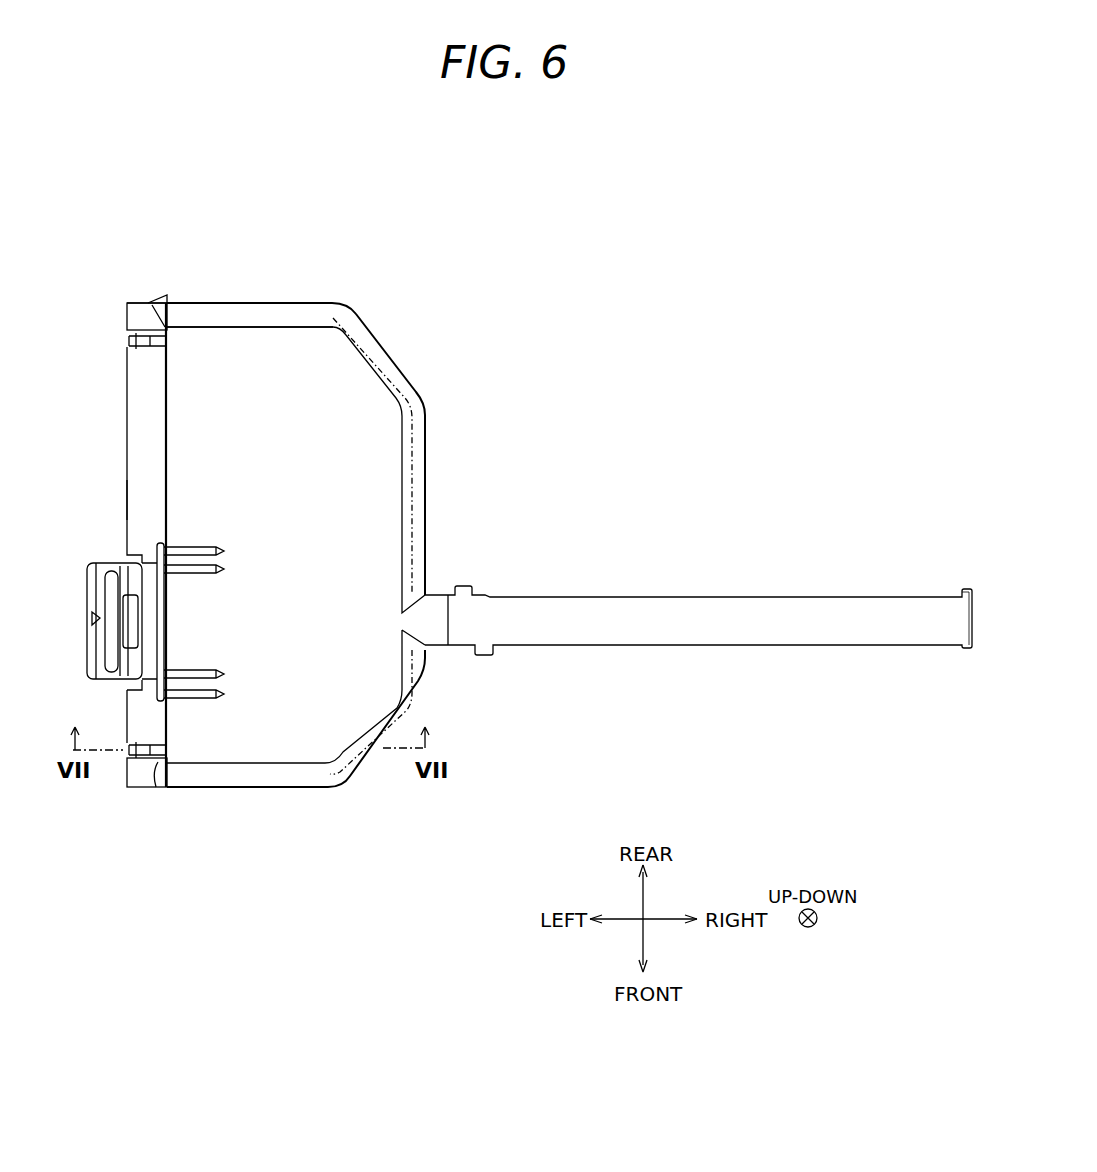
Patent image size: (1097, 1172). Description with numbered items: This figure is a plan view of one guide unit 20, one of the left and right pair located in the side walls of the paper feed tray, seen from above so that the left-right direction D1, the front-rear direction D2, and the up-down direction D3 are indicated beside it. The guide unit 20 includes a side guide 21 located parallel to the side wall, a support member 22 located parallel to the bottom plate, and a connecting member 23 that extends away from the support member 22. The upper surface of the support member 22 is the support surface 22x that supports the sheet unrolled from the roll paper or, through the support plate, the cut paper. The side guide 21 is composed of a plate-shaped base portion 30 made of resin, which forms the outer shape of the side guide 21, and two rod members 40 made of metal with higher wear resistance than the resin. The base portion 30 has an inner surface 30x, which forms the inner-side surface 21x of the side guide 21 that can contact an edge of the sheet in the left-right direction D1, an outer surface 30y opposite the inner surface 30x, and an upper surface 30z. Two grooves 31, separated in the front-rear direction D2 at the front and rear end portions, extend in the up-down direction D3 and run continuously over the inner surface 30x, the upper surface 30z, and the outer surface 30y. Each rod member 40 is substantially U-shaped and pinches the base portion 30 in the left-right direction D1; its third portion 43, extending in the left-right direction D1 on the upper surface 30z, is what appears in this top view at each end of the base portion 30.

The guide unit 20 is at (641, 272).
The side guide 21 is at (143, 305).
The inner-side surface 21x is at (168, 395).
The support member 22 is at (376, 497).
The support surface 22x is at (322, 545).
The connecting member 23 is at (693, 607).
The base portion 30 is at (135, 443).
The inner surface 30x is at (165, 500).
The outer surface 30y is at (127, 498).
The upper surface 30z is at (152, 452).
The groove 31 is at (131, 345).
The rod member 40 is at (142, 330).
The third portion 43 is at (147, 316).
The left-right direction D1 is at (650, 932).
The front-rear direction D2 is at (650, 903).
The up-down direction D3 is at (809, 936).